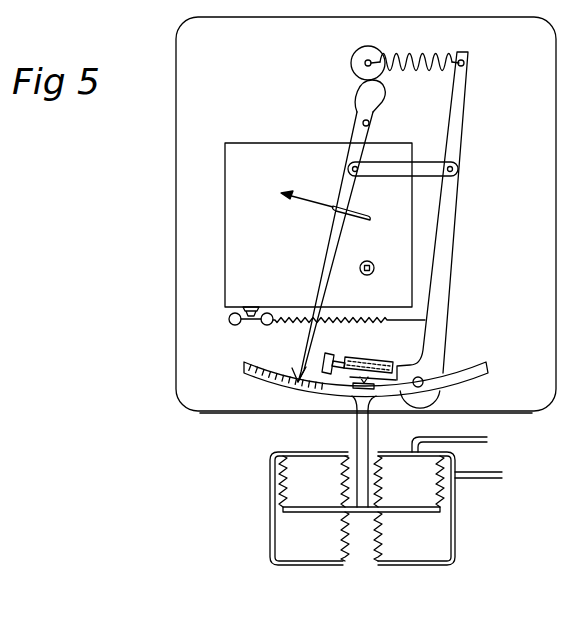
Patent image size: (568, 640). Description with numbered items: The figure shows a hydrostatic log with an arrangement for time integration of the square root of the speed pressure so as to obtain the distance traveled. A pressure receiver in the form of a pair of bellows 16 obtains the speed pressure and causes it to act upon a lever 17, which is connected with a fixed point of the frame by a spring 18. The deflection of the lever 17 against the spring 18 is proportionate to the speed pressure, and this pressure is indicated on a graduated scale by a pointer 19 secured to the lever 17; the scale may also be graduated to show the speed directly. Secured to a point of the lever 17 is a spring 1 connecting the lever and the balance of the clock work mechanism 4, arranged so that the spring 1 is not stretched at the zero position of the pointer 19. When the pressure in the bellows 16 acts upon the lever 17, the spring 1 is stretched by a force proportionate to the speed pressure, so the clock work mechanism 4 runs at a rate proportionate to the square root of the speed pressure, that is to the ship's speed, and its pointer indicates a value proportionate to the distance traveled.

The spring 1 is at (352, 323).
The clock work mechanism 4 is at (235, 241).
The pair of bellows 16 is at (290, 533).
The lever 17 is at (444, 283).
The spring 18 is at (421, 57).
The pointer 19 is at (338, 236).